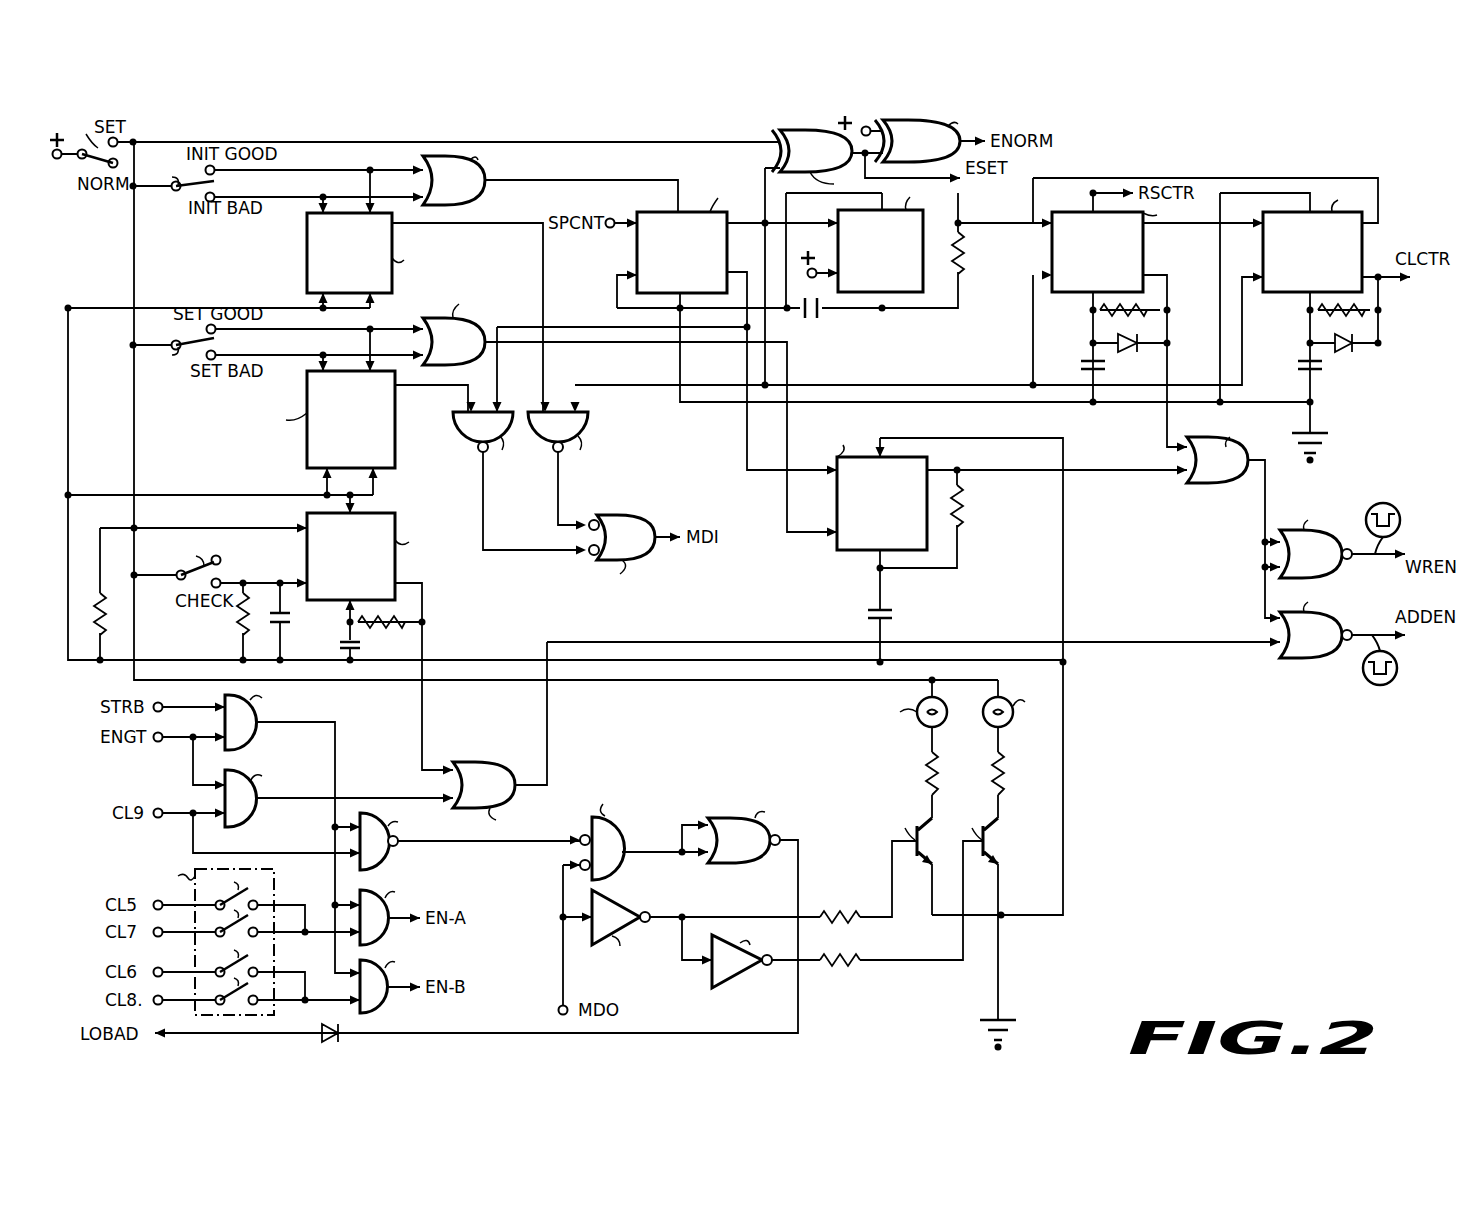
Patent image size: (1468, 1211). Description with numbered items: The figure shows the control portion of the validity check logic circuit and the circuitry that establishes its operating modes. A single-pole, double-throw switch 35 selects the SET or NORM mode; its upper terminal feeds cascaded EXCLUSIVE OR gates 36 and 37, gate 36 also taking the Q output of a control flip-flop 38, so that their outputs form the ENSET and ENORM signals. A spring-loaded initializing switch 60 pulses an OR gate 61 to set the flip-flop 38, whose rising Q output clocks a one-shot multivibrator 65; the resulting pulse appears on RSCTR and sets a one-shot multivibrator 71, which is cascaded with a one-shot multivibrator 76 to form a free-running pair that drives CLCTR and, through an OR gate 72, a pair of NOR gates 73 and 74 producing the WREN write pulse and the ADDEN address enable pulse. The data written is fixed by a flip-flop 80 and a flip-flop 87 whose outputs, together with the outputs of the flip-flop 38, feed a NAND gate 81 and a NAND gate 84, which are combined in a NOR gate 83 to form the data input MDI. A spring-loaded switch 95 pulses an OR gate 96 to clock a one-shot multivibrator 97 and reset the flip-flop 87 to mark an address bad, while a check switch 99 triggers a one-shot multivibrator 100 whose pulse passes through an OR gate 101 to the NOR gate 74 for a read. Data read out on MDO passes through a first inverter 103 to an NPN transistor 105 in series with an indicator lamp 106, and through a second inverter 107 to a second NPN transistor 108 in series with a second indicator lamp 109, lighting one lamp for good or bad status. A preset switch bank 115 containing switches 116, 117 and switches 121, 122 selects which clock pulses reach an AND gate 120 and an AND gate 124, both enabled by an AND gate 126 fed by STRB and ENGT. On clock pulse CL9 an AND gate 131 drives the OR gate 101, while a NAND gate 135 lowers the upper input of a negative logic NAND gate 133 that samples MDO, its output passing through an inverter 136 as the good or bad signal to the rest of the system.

The single-pole, double-throw switch 35 is at (89, 139).
The initializing switch 60 is at (182, 176).
The OR gate 61 is at (462, 176).
The flip-flop 80 is at (368, 253).
The spring loaded switch 95 is at (182, 353).
The OR gate 96 is at (454, 325).
The flip-flop 87 is at (328, 419).
The check switch 99 is at (194, 557).
The one-shot multivibrator 100 is at (375, 557).
The control flip-flop 38 is at (685, 236).
The EXCLUSIVE OR gate 36 is at (815, 164).
The EXCLUSIVE OR gate 37 is at (928, 137).
The one-shot multivibrator 65 is at (882, 236).
The one-shot multivibrator 71 is at (1116, 250).
The one-shot multivibrator 76 is at (1313, 240).
The OR gate 72 is at (1221, 451).
The NOR gate 73 is at (1340, 540).
The NOR gate 74 is at (1338, 635).
The one-shot multivibrator 97 is at (874, 490).
The NAND gate 84 is at (486, 441).
The NAND gate 81 is at (565, 441).
The NOR gate 83 is at (622, 553).
The AND gate 126 is at (260, 722).
The AND gate 131 is at (260, 795).
The positive logic NAND gate 135 is at (395, 840).
The OR gate 101 is at (491, 797).
The preset switch bank 115 is at (210, 941).
The switch 116 is at (226, 889).
The switch 117 is at (226, 916).
The switch 121 is at (226, 956).
The switch 122 is at (226, 984).
The AND gate 120 is at (394, 914).
The AND gate 124 is at (394, 983).
The negative logic NAND gate 133 is at (610, 839).
The inverter 136 is at (754, 830).
The first inverter 103 is at (624, 923).
The second inverter 107 is at (749, 960).
The NPN transistor 105 is at (905, 836).
The indicator lamp 106 is at (907, 712).
The second NPN transistor 108 is at (972, 836).
The second indicator lamp 109 is at (1019, 712).